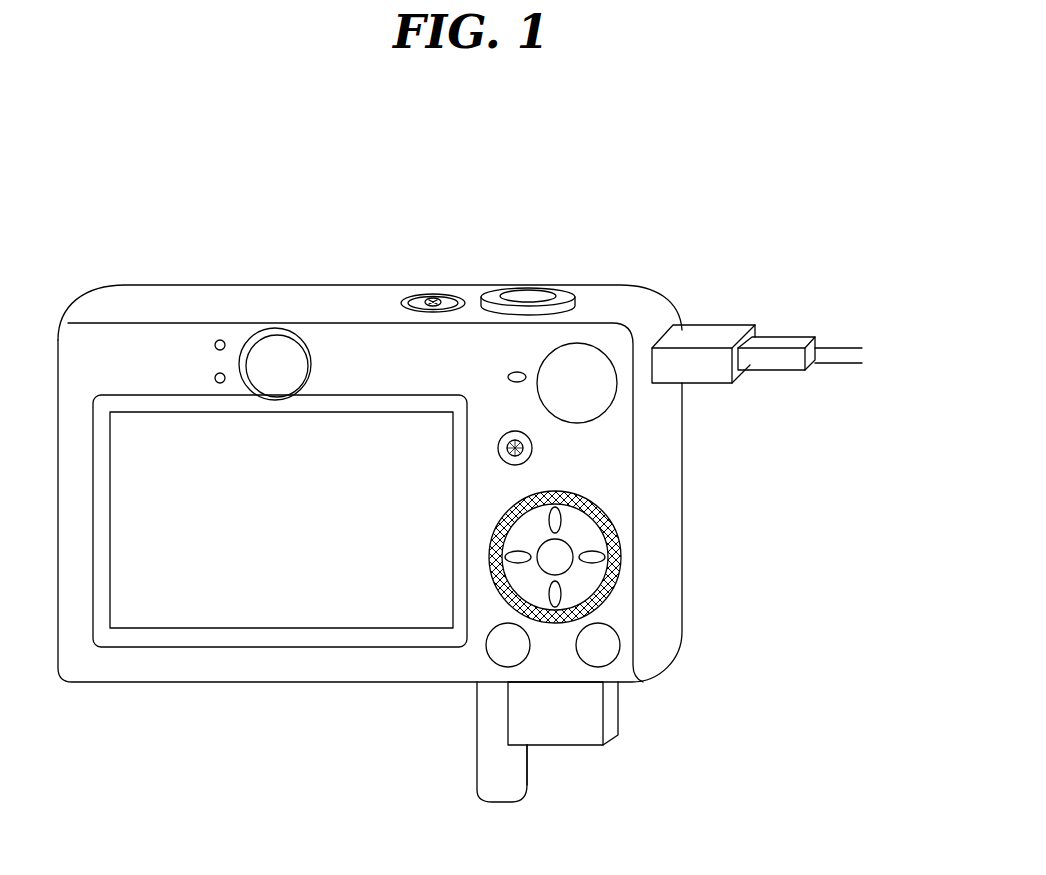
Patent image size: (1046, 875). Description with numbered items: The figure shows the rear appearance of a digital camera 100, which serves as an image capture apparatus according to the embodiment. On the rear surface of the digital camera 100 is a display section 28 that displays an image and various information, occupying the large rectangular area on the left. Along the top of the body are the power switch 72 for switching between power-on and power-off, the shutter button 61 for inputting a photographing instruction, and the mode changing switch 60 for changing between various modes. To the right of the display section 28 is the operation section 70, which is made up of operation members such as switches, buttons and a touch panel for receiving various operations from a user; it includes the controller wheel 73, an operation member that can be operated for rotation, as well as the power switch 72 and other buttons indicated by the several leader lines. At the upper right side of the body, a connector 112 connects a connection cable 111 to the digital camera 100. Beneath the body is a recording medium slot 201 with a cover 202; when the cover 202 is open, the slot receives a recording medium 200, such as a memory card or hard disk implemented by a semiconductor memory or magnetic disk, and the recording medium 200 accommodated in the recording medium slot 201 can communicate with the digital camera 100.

The digital camera 100 is at (162, 737).
The display section 28 is at (222, 603).
The power switch 72 is at (440, 298).
The shutter button 61 is at (537, 290).
The mode changing switch 60 is at (592, 357).
The connector 112 is at (702, 333).
The connection cable 111 is at (773, 343).
The controller wheel 73 is at (513, 503).
The operation section 70 is at (528, 323).
The recording medium 200 is at (582, 723).
The recording medium slot 201 is at (528, 685).
The cover 202 is at (530, 782).